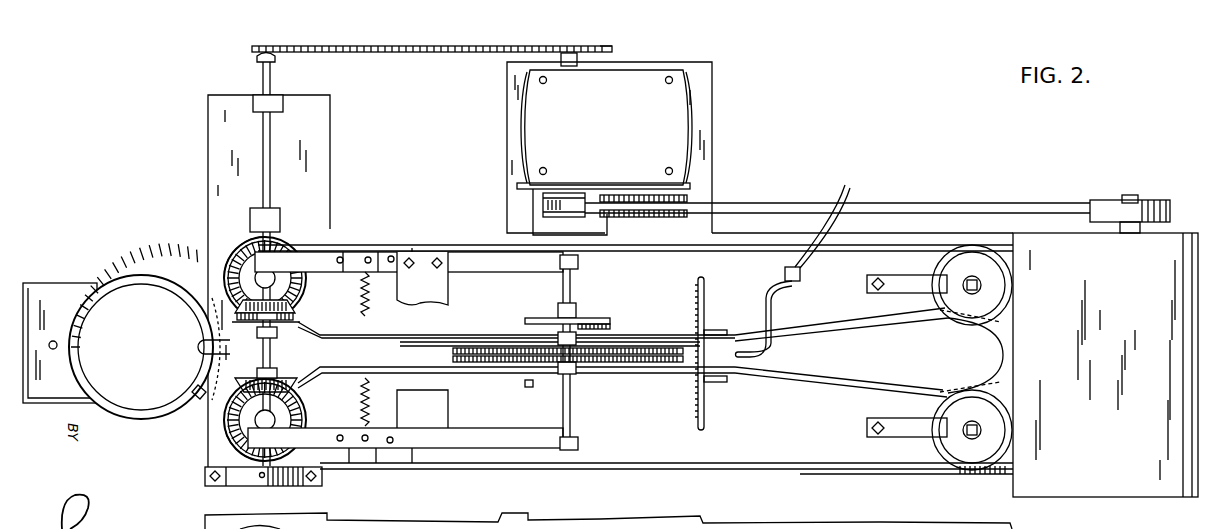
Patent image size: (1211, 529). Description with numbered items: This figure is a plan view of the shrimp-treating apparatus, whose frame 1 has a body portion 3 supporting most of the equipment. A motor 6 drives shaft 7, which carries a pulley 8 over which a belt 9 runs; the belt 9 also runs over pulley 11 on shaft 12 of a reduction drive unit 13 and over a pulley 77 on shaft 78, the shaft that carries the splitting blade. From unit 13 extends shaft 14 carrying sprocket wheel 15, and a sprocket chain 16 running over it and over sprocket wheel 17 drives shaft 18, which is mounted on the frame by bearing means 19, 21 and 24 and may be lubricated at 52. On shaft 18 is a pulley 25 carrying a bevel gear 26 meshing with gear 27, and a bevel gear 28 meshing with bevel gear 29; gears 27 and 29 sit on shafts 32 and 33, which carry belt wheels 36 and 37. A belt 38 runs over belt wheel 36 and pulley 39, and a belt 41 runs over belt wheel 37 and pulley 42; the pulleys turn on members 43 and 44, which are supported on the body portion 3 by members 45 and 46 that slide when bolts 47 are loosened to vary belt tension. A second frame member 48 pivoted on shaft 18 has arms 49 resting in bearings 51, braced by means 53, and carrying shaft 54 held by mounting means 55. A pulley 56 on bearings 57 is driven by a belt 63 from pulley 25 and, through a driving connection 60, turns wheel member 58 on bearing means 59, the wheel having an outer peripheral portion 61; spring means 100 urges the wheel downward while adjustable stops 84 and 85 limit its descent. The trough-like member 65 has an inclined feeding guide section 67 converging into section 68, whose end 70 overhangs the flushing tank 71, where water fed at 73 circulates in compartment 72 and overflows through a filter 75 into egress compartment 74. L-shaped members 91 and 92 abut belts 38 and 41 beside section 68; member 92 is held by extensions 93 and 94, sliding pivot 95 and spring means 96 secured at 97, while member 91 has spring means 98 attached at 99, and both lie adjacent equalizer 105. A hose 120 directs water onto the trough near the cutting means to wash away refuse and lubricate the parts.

The frame 1 is at (341, 184).
The body portion 3 is at (838, 471).
The motor 6 is at (1117, 490).
The shaft 7 is at (1141, 228).
The pulley 8 is at (1100, 203).
The belt 9 is at (898, 206).
The pulley 11 is at (665, 217).
The shaft 12 is at (641, 196).
The reduction drive unit 13 is at (686, 138).
The shaft 14 is at (569, 66).
The sprocket wheel 15 is at (613, 47).
The sprocket chain 16 is at (432, 53).
The sprocket wheel 17 is at (254, 54).
The shaft 18 is at (268, 78).
The bearing means 19 is at (284, 108).
The bearing means 21 is at (281, 220).
The bearing means 24 is at (246, 479).
The pulley 25 is at (296, 313).
The bevel gear 26 is at (234, 309).
The gear 27 is at (300, 281).
The bevel gear 28 is at (298, 386).
The bevel gear 29 is at (303, 419).
The shaft 32 is at (256, 277).
The shaft 33 is at (256, 420).
The belt wheel 36 is at (243, 247).
The belt wheel 37 is at (226, 462).
The belt 38 is at (676, 252).
The pulley 39 is at (993, 276).
The belt 41 is at (819, 380).
The pulley 42 is at (991, 424).
The member 43 is at (982, 287).
The member 44 is at (982, 432).
The member 45 is at (920, 294).
The member 46 is at (908, 430).
The bolts 47 is at (872, 284).
The second frame member 48 is at (503, 452).
The arms 49 is at (494, 264).
The bearing 51 is at (253, 263).
The lubrication means 52 is at (262, 478).
The bracing means 53 is at (448, 262).
The shaft 54 is at (571, 294).
The mounting means 55 is at (579, 263).
The pulley 56 is at (578, 327).
The bearings 57 is at (558, 313).
The wheel member 58 is at (652, 348).
The bearing means 59 is at (563, 376).
The driving connection 60 is at (575, 375).
The outer peripheral portion 61 is at (632, 364).
The belt 63 is at (490, 322).
The trough-like member 65 is at (1003, 354).
The feeding guide section 67 is at (840, 355).
The trough section 68 is at (369, 356).
The trough end 70 is at (201, 347).
The flushing tank 71 is at (141, 265).
The compartment 72 is at (140, 388).
The water inlet 73 is at (193, 391).
The egress compartment 74 is at (61, 287).
The filter 75 is at (75, 349).
The pulley 77 is at (548, 219).
The shaft 78 is at (585, 196).
The adjustable stop 84 is at (347, 240).
The adjustable stop 85 is at (349, 466).
The L-shaped member 91 is at (633, 335).
The L-shaped member 92 is at (679, 375).
The extension 93 is at (402, 424).
The extension 94 is at (708, 380).
The sliding pivot 95 is at (526, 386).
The spring means 96 is at (378, 402).
The spring attachment 97 is at (377, 466).
The spring means 98 is at (377, 294).
The spring attachment 99 is at (379, 242).
The spring means 100 is at (413, 242).
The equalizer 105 is at (713, 292).
The hose 120 is at (768, 338).